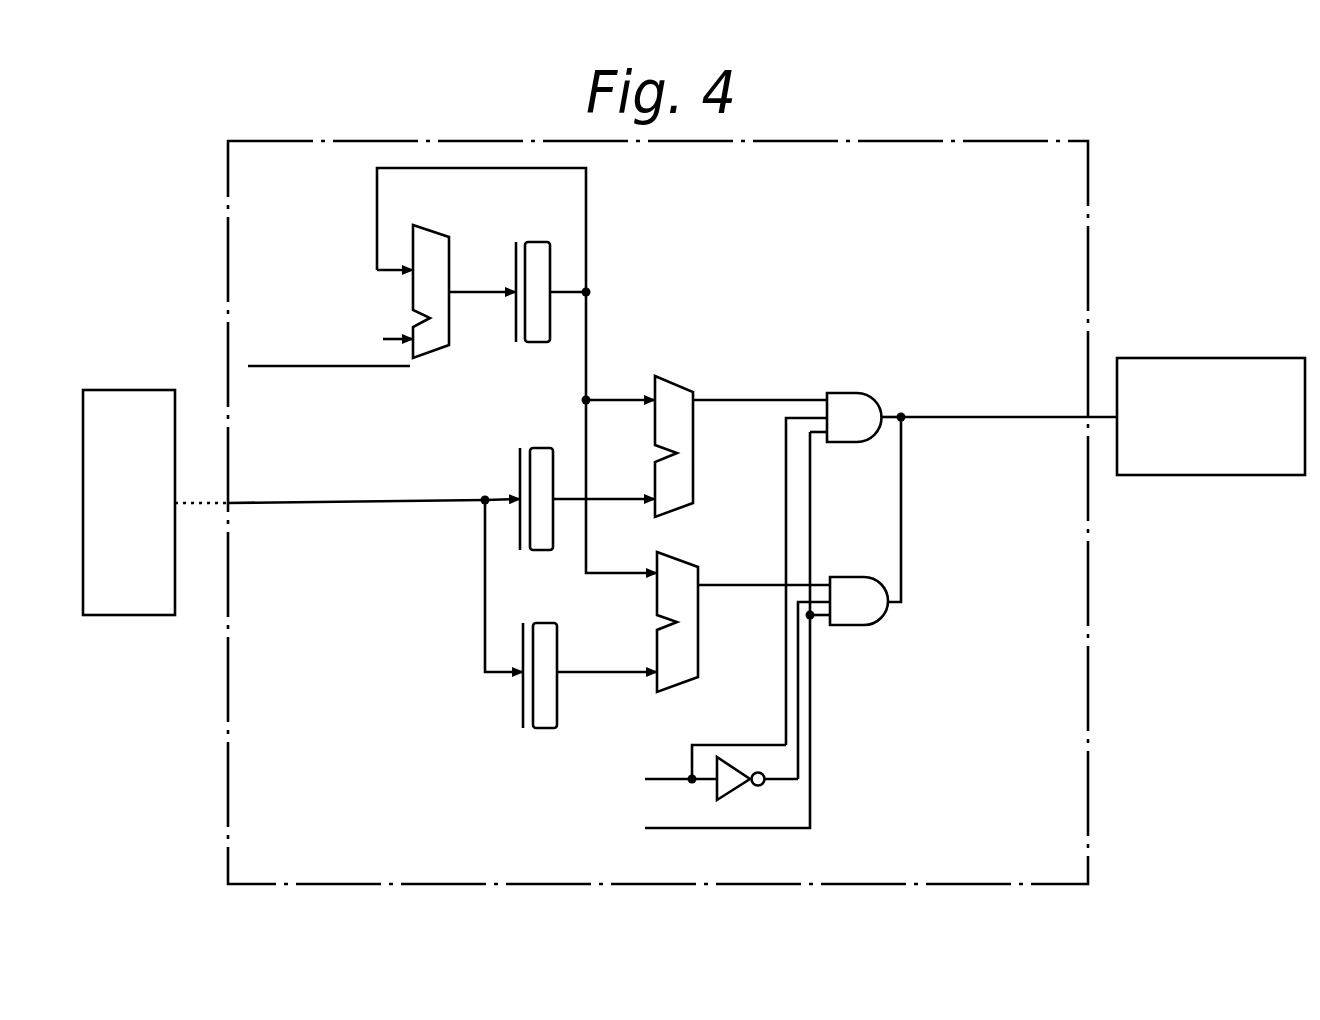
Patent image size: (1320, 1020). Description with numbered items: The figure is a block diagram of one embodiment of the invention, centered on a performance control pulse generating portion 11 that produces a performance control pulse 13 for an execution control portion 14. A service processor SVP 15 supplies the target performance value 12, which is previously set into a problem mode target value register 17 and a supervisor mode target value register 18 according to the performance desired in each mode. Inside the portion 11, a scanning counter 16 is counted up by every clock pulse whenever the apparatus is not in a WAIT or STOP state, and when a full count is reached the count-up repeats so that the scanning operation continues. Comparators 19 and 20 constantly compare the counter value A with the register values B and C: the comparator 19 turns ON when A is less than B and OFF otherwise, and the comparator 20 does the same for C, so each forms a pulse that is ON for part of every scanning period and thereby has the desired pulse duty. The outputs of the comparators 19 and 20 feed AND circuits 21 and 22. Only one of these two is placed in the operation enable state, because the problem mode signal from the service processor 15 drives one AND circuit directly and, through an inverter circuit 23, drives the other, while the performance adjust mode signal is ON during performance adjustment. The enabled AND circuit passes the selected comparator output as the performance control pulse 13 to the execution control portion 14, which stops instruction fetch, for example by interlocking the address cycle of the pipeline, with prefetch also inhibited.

The performance control pulse generating portion 11 is at (1089, 164).
The target performance value 12 is at (225, 501).
The performance control pulse 13 is at (1097, 417).
The execution control portion 14 is at (1195, 358).
The service processor SVP 15 is at (128, 390).
The scanning counter 16 is at (586, 197).
The problem mode target value register 17 is at (538, 448).
The supervisor mode target value register 18 is at (540, 623).
The comparator 19 is at (665, 378).
The comparator 20 is at (690, 558).
The AND circuit 21 is at (855, 393).
The AND circuit 22 is at (848, 577).
The inverter circuit 23 is at (744, 792).